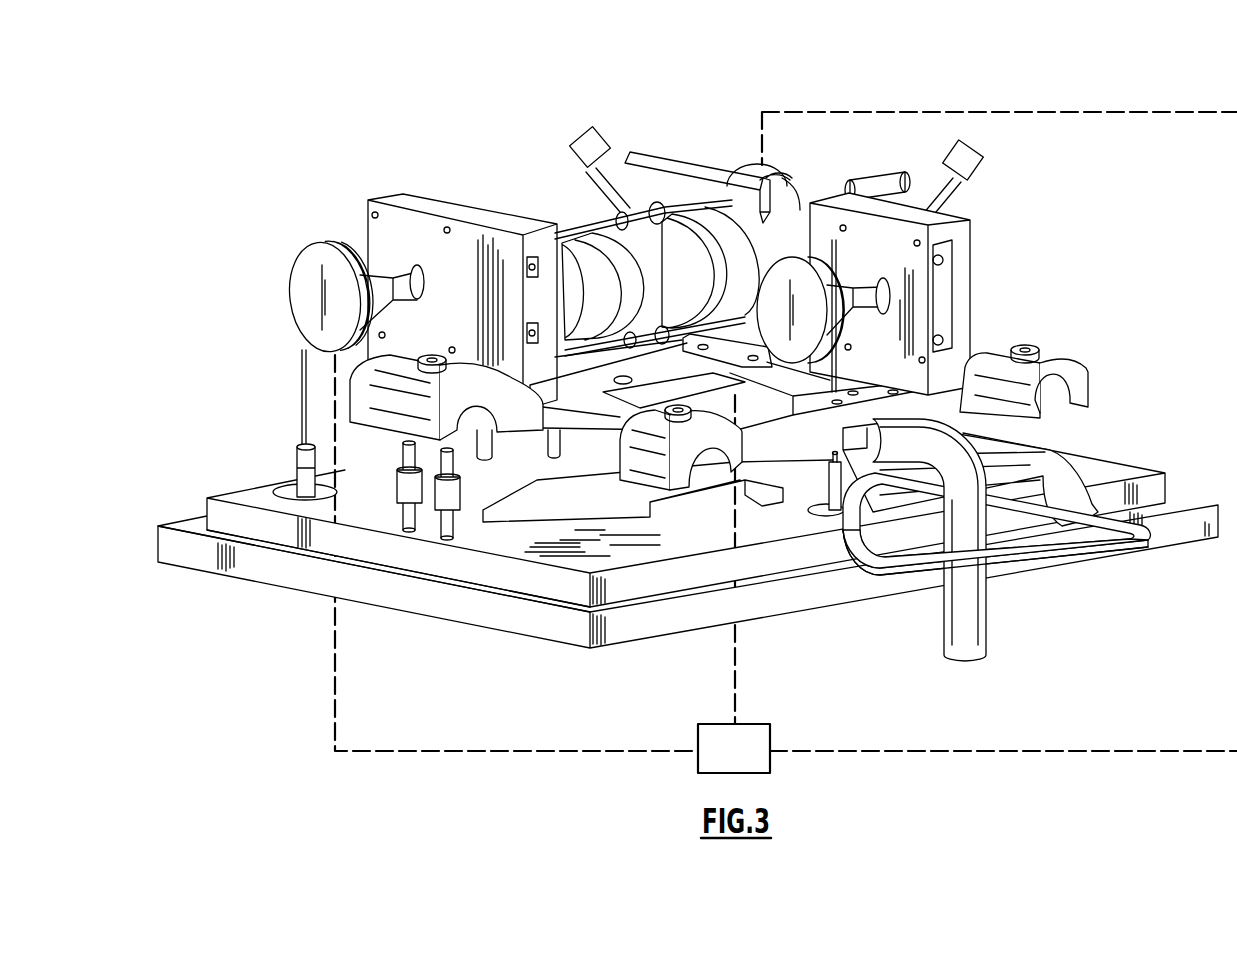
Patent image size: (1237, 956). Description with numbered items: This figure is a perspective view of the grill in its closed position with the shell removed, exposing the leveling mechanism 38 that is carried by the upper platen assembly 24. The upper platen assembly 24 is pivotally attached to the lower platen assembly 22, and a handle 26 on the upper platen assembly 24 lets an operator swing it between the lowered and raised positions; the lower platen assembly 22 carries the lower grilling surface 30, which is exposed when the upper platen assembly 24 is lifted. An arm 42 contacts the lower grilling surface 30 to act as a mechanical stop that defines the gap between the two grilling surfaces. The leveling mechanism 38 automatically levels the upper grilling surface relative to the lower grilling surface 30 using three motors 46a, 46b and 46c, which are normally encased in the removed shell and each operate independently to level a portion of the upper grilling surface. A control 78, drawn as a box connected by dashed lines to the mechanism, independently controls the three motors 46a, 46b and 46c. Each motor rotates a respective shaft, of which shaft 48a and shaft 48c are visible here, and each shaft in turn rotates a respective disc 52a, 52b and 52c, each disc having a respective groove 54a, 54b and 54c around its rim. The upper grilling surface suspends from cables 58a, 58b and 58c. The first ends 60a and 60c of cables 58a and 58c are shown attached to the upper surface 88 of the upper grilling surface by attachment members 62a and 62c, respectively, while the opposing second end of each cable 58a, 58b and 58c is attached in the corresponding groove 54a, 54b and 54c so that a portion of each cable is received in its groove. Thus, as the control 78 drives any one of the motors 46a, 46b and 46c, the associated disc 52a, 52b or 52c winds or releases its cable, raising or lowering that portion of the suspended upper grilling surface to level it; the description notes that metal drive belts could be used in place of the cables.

The lower platen assembly 22 is at (212, 562).
The upper platen assembly 24 is at (455, 565).
The handle 26 is at (1083, 545).
The lower grilling surface 30 is at (280, 550).
The leveling mechanism 38 is at (1018, 83).
The arm 42 is at (983, 607).
The motor 46a is at (577, 250).
The motor 46b is at (695, 230).
The motor 46c is at (943, 322).
The shaft 48a is at (417, 273).
The shaft 48c is at (885, 297).
The disc 52a is at (300, 303).
The disc 52b is at (750, 168).
The disc 52c is at (805, 290).
The groove 54a is at (328, 243).
The groove 54b is at (772, 170).
The groove 54c is at (845, 290).
The cable 58a is at (302, 392).
The cable 58b is at (782, 178).
The cable 58c is at (836, 382).
The first end 60a is at (302, 447).
The first end 60c is at (830, 465).
The attachment member 62a is at (297, 458).
The attachment member 62c is at (823, 503).
The control 78 is at (721, 761).
The upper surface 88 is at (540, 555).